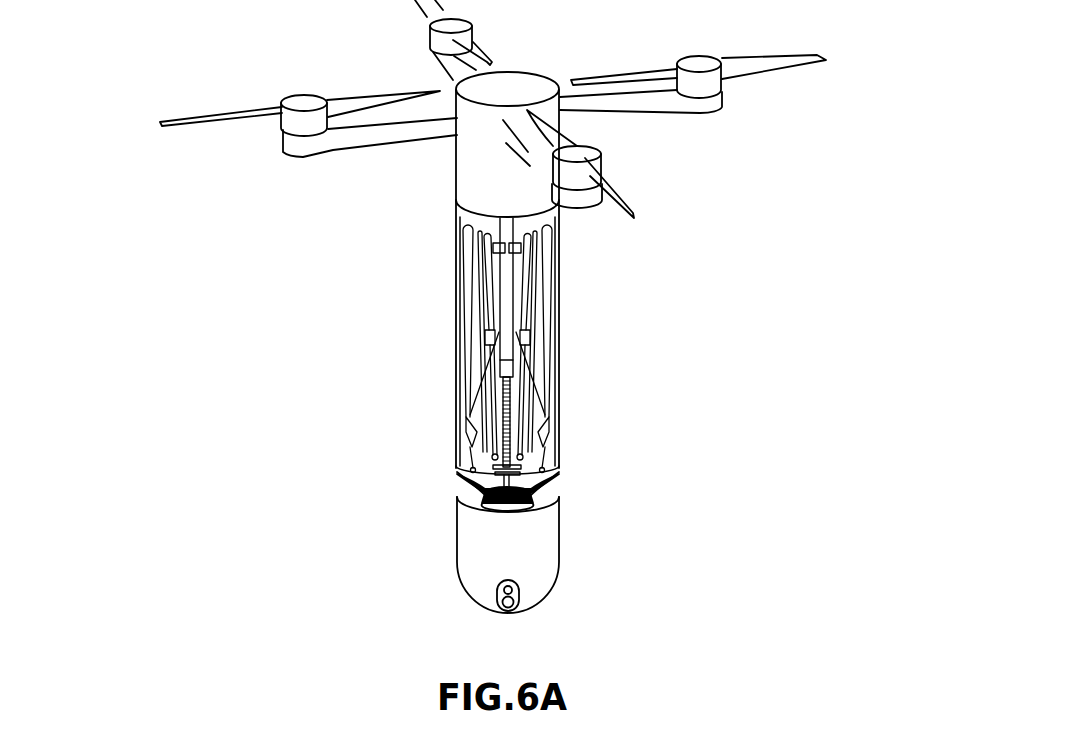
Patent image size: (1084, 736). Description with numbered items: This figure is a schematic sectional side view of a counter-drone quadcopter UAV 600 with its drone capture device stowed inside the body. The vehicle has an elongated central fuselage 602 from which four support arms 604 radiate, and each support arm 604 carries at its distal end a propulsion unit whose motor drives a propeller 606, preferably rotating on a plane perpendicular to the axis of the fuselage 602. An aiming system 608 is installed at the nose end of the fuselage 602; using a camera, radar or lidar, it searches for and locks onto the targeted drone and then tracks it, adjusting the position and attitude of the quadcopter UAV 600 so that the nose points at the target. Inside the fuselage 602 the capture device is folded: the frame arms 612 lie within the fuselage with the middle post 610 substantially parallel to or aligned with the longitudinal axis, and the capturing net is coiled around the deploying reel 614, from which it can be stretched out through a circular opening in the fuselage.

The counter-drone quadcopter UAV 600 is at (611, 388).
The elongated central fuselage 602 is at (452, 410).
The support arms 604 is at (452, 68).
The propeller 606 is at (205, 114).
The aiming system 608 is at (503, 610).
The middle post 610 is at (510, 362).
The frame arms 612 is at (470, 300).
The deploying reel 614 is at (555, 494).